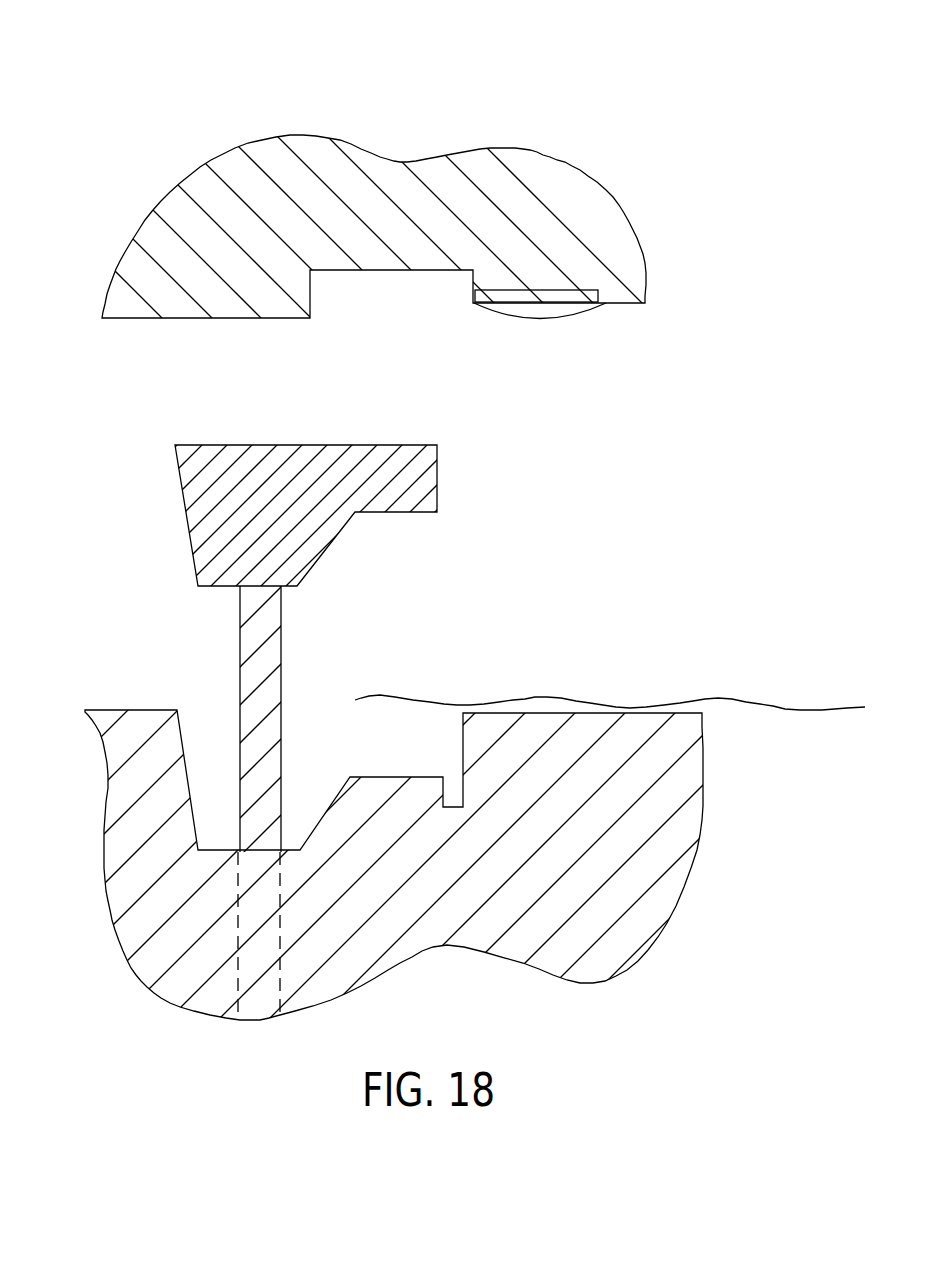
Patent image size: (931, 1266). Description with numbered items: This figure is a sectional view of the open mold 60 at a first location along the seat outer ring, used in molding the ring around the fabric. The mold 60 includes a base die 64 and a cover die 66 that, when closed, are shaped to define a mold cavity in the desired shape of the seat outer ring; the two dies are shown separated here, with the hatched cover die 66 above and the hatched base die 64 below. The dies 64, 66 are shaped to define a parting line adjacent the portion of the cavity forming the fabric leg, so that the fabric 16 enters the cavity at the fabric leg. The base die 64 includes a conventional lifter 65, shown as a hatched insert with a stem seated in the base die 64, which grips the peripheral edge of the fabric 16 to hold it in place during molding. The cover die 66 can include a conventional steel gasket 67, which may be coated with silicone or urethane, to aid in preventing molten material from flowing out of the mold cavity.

The mold 60 is at (505, 135).
The cover die 66 is at (607, 245).
The steel gasket 67 is at (502, 316).
The lifter 65 is at (323, 552).
The base die 64 is at (658, 805).
The fabric 16 is at (717, 700).